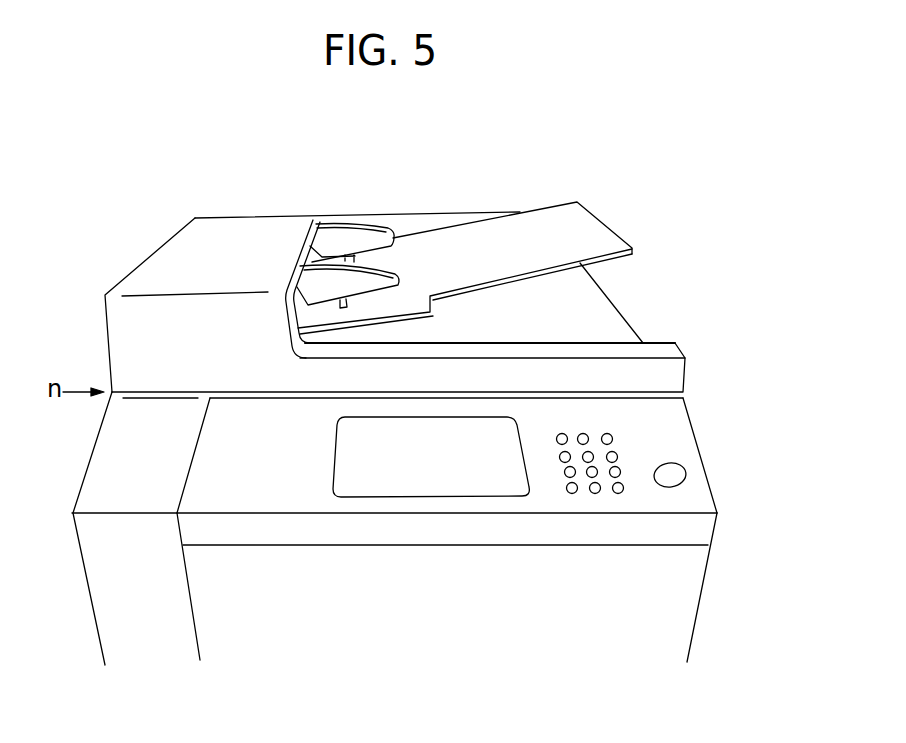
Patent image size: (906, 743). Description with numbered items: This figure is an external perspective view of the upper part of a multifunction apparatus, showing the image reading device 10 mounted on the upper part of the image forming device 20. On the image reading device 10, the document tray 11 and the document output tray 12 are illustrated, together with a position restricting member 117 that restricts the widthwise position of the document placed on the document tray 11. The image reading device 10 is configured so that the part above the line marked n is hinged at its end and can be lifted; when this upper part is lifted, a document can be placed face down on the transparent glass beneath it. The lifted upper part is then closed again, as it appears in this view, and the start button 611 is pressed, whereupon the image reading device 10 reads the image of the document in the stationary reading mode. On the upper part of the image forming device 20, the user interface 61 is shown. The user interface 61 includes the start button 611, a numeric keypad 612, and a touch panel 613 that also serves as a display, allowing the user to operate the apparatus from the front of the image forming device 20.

The image reading device 10 is at (514, 150).
The document tray 11 is at (578, 220).
The document output tray 12 is at (597, 310).
The position restricting member 117 is at (360, 278).
The image forming device 20 is at (760, 392).
The user interface 61 is at (692, 412).
The start button 611 is at (670, 475).
The numeric keypad 612 is at (613, 453).
The touch panel 613 is at (508, 435).